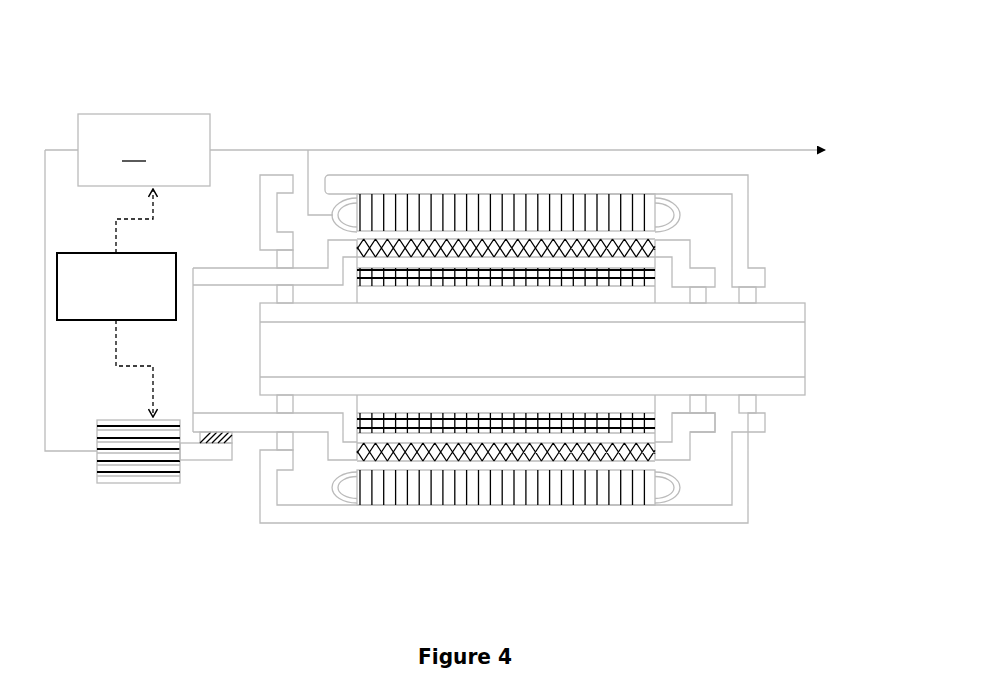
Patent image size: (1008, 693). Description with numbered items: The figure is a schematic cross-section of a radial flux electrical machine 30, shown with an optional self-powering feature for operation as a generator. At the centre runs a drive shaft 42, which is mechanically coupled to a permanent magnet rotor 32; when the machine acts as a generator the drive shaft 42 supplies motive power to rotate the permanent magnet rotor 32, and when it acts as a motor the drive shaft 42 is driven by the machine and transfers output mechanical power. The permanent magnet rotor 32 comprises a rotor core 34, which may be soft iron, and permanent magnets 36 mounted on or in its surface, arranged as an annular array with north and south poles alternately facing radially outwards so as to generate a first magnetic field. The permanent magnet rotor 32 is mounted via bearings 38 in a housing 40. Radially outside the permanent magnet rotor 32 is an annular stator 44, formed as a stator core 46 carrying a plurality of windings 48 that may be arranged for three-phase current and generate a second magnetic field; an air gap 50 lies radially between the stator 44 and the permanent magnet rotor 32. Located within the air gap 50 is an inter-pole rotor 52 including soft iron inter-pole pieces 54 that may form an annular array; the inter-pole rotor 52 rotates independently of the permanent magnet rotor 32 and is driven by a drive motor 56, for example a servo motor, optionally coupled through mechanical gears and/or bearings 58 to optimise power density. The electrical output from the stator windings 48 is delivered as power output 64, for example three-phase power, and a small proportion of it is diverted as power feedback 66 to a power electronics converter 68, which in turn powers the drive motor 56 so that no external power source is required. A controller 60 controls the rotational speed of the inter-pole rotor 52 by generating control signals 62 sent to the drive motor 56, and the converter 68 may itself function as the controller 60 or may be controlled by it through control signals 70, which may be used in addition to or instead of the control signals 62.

The electrical machine 30 is at (115, 77).
The permanent magnet rotor 32 is at (658, 405).
The rotor core 34 is at (545, 404).
The permanent magnets 36 is at (468, 418).
The bearings 38 is at (708, 293).
The housing 40 is at (737, 227).
The drive shaft 42 is at (810, 352).
The stator 44 is at (560, 498).
The stator core 46 is at (473, 488).
The windings 48 is at (665, 497).
The air gap 50 is at (697, 458).
The inter-pole rotor 52 is at (695, 420).
The inter-pole pieces 54 is at (582, 240).
The drive motor 56 is at (118, 458).
The mechanical gears and/or bearings 58 is at (203, 440).
The controller 60 is at (135, 263).
The control signals 62 is at (130, 368).
The power output 64 is at (370, 149).
The power feedback 66 is at (217, 147).
The power electronics converter 68 is at (144, 150).
The control signals 70 is at (153, 208).